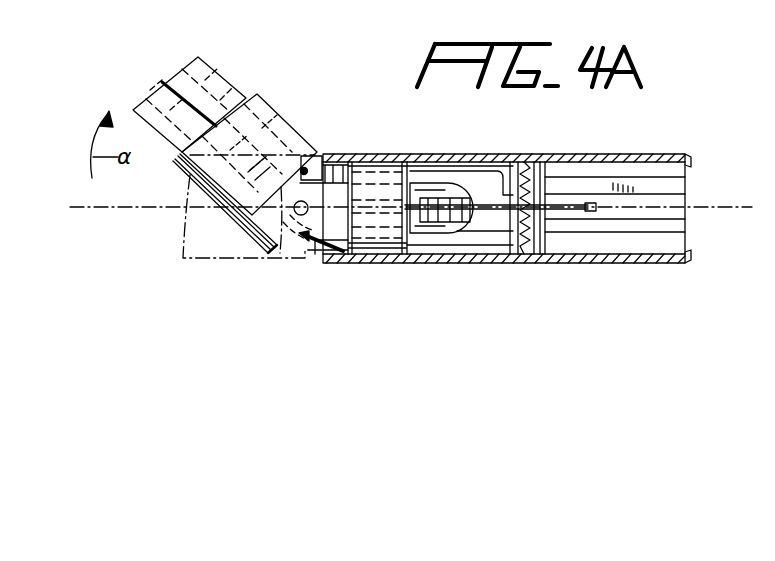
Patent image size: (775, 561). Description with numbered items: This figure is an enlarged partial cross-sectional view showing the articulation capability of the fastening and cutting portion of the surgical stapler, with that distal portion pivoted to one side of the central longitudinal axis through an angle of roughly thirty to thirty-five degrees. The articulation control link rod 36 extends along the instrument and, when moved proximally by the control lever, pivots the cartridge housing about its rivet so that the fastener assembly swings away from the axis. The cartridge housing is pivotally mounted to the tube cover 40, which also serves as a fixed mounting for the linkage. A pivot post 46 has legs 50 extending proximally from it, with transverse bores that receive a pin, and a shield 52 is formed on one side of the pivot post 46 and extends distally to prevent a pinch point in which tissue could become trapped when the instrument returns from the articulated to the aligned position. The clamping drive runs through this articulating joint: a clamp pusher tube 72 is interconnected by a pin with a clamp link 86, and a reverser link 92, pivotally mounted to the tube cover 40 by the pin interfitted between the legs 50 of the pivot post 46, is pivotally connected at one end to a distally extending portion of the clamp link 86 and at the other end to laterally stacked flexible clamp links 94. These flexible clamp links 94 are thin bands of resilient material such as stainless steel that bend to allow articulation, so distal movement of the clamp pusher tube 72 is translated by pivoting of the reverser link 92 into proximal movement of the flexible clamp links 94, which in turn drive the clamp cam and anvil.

The articulation control link rod 36 is at (657, 187).
The tube cover 40 is at (507, 242).
The pivot post 46 is at (369, 185).
The legs 50 is at (430, 187).
The shield 52 is at (325, 258).
The clamp pusher tube 72 is at (572, 254).
The clamp link 86 is at (568, 208).
The reverser link 92 is at (457, 234).
The flexible clamp links 94 is at (419, 224).